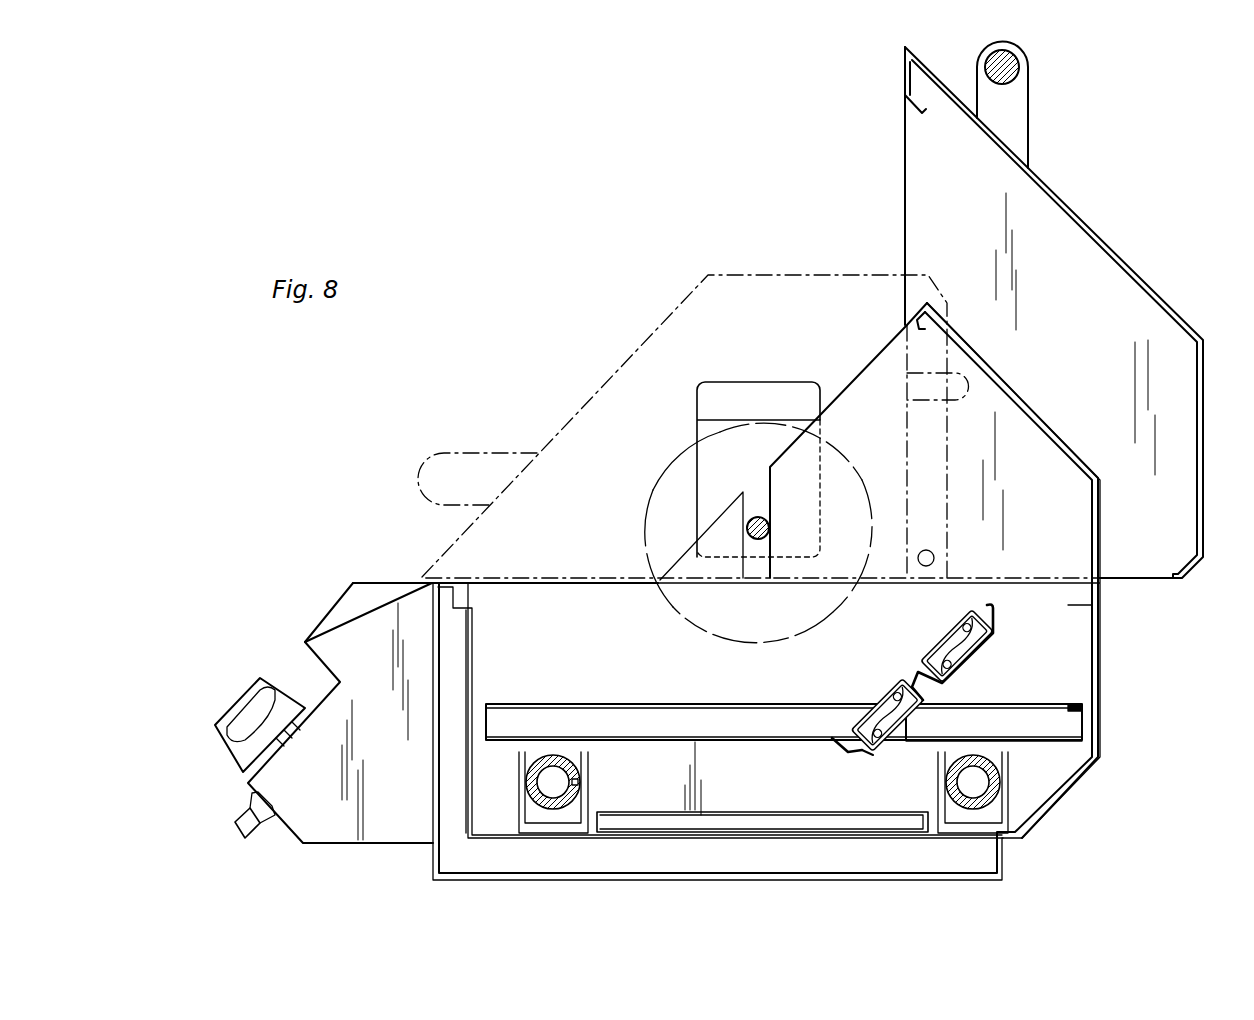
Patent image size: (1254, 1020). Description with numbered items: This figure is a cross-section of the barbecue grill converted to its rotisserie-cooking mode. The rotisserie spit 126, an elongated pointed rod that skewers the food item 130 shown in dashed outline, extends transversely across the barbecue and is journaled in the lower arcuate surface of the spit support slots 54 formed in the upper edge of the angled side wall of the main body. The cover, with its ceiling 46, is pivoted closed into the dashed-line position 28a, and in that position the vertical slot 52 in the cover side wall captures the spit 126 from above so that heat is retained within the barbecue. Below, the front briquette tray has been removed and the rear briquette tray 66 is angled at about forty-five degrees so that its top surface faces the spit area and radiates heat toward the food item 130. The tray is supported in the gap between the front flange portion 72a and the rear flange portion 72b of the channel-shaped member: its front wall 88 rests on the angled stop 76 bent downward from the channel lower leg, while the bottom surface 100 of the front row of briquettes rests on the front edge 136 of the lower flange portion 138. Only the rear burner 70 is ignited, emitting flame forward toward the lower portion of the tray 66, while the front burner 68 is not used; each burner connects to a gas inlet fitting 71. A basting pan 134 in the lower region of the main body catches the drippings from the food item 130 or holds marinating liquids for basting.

The dashed-line position of the cover 28a is at (418, 478).
The vertical slot 52 is at (903, 383).
The spit support slots 54 is at (768, 475).
The rotisserie spit 126 is at (748, 525).
The food item 130 is at (653, 485).
The ceiling 46 is at (225, 733).
The gas inlet fitting 71 is at (252, 825).
The front flange portion 72a is at (602, 704).
The rear flange portion 72b is at (1043, 704).
The lower flange portion 138 is at (1068, 745).
The angled rear briquette tray stop 76 is at (840, 748).
The rear briquette tray 66 is at (982, 667).
The bottom surface of a front row of briquettes 100 is at (898, 722).
The front wall of the rear briquette tray 88 is at (862, 757).
The front edge 136 is at (895, 757).
The front burner 68 is at (527, 785).
The rear burner 70 is at (1000, 777).
The basting pan 134 is at (790, 822).